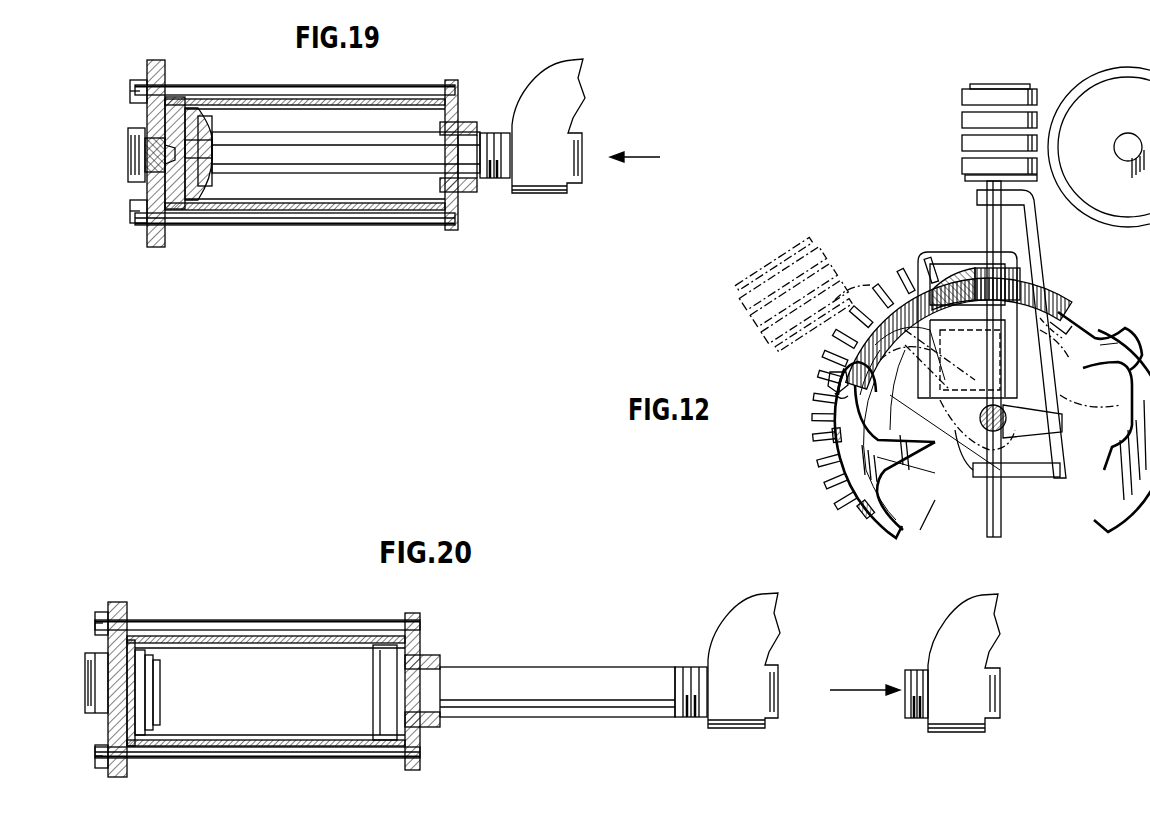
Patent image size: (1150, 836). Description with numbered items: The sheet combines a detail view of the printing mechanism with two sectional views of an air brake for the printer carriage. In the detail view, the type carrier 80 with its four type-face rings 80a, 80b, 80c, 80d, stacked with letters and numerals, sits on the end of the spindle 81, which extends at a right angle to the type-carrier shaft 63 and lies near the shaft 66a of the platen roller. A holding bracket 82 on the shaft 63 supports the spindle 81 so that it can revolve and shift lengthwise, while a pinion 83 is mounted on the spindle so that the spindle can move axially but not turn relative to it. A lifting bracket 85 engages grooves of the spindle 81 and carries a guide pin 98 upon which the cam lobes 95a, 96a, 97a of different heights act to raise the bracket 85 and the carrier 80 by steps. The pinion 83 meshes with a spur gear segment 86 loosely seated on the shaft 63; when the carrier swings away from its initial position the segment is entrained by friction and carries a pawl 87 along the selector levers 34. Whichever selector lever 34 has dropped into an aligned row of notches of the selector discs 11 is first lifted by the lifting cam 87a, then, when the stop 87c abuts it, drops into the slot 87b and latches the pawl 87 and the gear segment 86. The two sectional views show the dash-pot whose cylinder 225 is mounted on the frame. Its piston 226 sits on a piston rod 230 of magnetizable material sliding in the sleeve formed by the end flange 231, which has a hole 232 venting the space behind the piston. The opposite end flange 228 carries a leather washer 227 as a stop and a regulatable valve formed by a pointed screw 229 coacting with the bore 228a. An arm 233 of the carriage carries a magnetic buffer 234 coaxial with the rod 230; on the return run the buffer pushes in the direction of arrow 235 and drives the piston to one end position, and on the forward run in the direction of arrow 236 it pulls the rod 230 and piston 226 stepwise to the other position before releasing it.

In FIG. 19, the cylinder 225 is at (250, 99).
In FIG. 20, the cylinder 225 is at (259, 636).
In FIG. 19, the piston 226 is at (209, 200).
In FIG. 20, the piston 226 is at (387, 735).
In FIG. 19, the washer 227 is at (196, 112).
In FIG. 20, the washer 227 is at (154, 679).
In FIG. 19, the end flange 228 is at (217, 136).
In FIG. 20, the end flange 228 is at (131, 636).
In FIG. 19, the bore 228a is at (212, 149).
In FIG. 19, the pointed screw 229 is at (133, 162).
In FIG. 20, the pointed screw 229 is at (90, 669).
In FIG. 19, the piston rod 230 is at (292, 131).
In FIG. 20, the piston rod 230 is at (526, 673).
In FIG. 19, the end flange 231 is at (462, 122).
In FIG. 20, the end flange 231 is at (441, 667).
In FIG. 19, the hole 232 is at (460, 105).
In FIG. 20, the hole 232 is at (422, 650).
In FIG. 19, the arm 233 is at (581, 89).
In FIG. 20, the arm 233 is at (777, 616).
In FIG. 19, the buffer 234 is at (502, 181).
In FIG. 20, the buffer 234 is at (695, 720).
In FIG. 19, the arrow 235 is at (644, 155).
In FIG. 20, the arrow 236 is at (845, 687).
In FIG. 12, the type carrier 80 is at (976, 123).
In FIG. 12, the type-face ring 80a is at (962, 96).
In FIG. 12, the type-face ring 80b is at (962, 120).
In FIG. 12, the type-face ring 80c is at (962, 144).
In FIG. 12, the type-face ring 80d is at (962, 168).
In FIG. 12, the shaft of the platen roller 66a is at (1124, 156).
In FIG. 12, the spindle 81 is at (1001, 531).
In FIG. 12, the holding bracket 82 is at (1040, 478).
In FIG. 12, the pinion 83 is at (1012, 270).
In FIG. 12, the lifting bracket 85 is at (1038, 236).
In FIG. 12, the spur gear segment 86 is at (1058, 294).
In FIG. 12, the pawl 87 is at (852, 387).
In FIG. 12, the lifting cam 87a is at (826, 378).
In FIG. 12, the slot 87b is at (834, 396).
In FIG. 12, the stop 87c is at (822, 410).
In FIG. 12, the guide pin 98 is at (1066, 328).
In FIG. 12, the cam lobe 96a is at (1092, 352).
In FIG. 12, the cam lobe 95a is at (1070, 378).
In FIG. 12, the cam lobe 97a is at (1090, 388).
In FIG. 12, the type-carrier shaft 63 is at (988, 433).
In FIG. 12, the selector disc 11 is at (893, 532).
In FIG. 12, the selector lever 34 is at (840, 492).